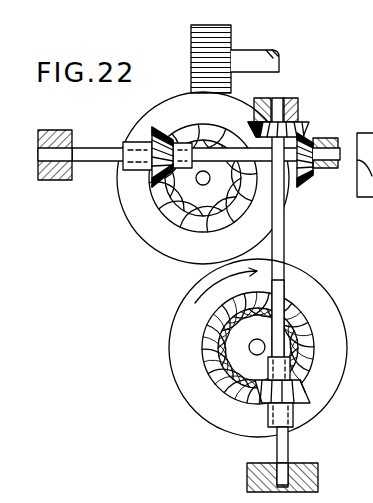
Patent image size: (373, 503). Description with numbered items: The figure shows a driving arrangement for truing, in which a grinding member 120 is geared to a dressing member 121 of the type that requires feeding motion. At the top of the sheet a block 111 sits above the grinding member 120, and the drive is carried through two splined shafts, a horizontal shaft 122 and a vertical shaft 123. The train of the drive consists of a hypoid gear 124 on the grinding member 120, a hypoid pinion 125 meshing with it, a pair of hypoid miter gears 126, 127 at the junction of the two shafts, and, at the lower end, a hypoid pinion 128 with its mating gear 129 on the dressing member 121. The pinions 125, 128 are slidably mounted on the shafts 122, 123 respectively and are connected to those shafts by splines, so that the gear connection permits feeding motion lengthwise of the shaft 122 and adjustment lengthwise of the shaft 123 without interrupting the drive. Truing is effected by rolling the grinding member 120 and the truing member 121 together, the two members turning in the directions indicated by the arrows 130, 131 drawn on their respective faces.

The drive unit / motor block 111 is at (216, 42).
The grinding member 120 is at (159, 245).
The dressing member 121 is at (188, 350).
The shaft 122 is at (103, 152).
The shaft 123 is at (285, 239).
The hypoid gear 124 is at (152, 205).
The hypoid pinion 125 is at (149, 129).
The hypoid miter gear 126 is at (308, 143).
The hypoid miter gear 127 is at (298, 123).
The hypoid pinion 128 is at (263, 405).
The mating gear 129 is at (227, 383).
The arrow 130 is at (185, 251).
The arrow 131 is at (195, 303).